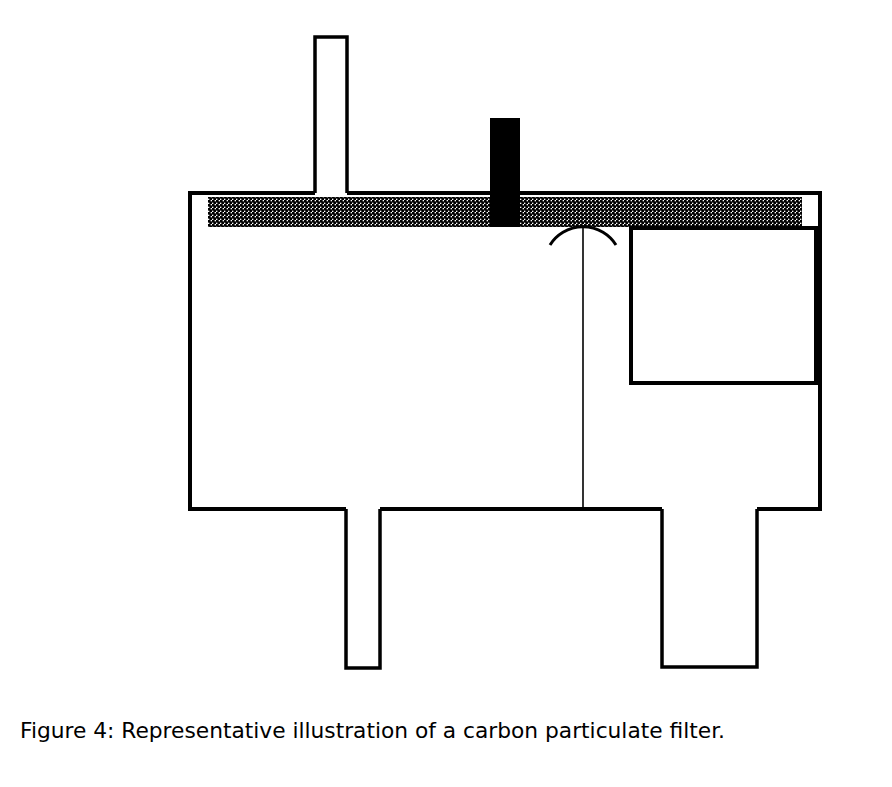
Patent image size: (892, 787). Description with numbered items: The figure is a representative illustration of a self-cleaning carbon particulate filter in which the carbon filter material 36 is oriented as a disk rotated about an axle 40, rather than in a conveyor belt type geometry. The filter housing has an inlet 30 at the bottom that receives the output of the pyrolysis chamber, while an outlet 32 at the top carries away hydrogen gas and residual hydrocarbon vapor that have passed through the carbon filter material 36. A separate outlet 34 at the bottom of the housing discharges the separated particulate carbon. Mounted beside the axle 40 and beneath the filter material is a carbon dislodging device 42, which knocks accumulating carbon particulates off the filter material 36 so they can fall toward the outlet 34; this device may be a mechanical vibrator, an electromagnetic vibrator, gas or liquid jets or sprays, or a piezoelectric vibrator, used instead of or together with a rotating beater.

The inlet 30 is at (319, 588).
The outlet 32 is at (281, 115).
The outlet 34 is at (624, 588).
The carbon filter material 36 is at (553, 212).
The axle 40 is at (505, 139).
The device that dislodges the particulate carbon 42 is at (723, 305).